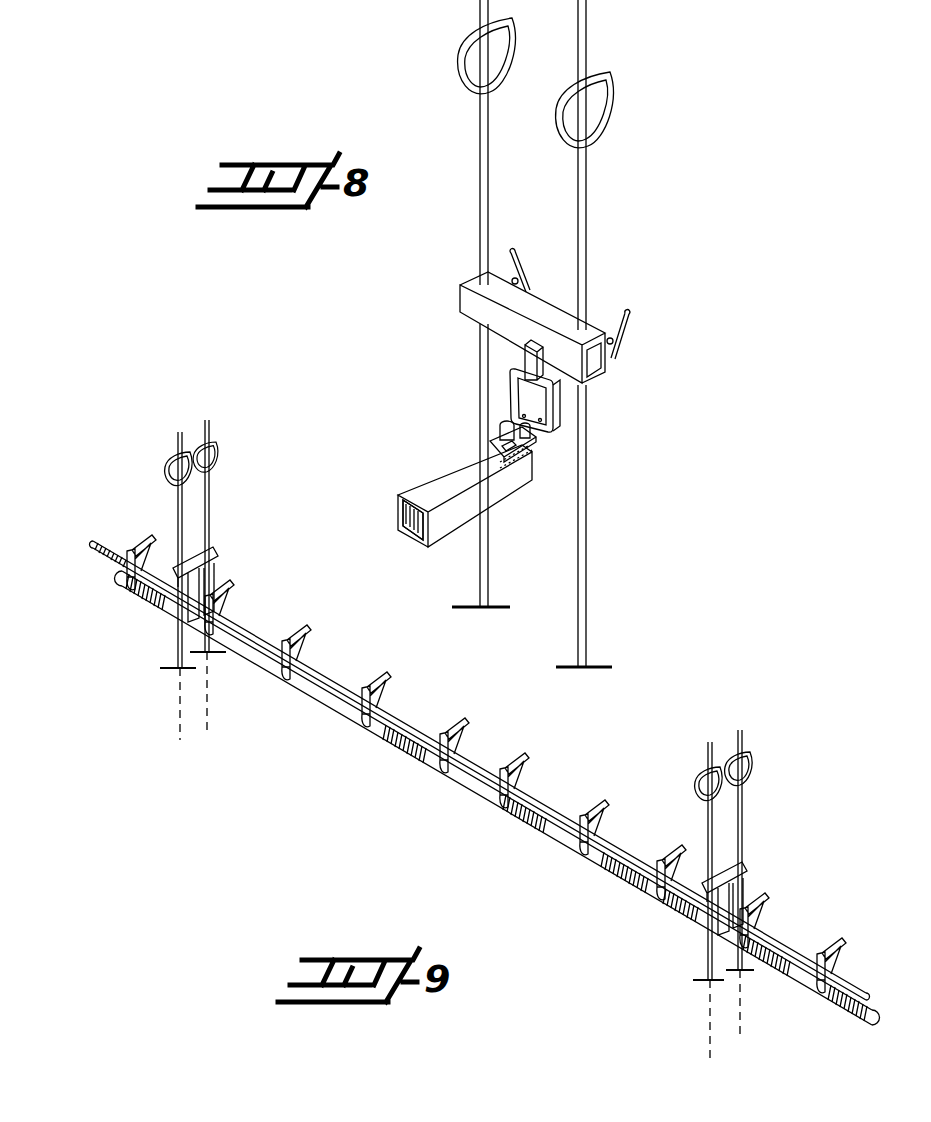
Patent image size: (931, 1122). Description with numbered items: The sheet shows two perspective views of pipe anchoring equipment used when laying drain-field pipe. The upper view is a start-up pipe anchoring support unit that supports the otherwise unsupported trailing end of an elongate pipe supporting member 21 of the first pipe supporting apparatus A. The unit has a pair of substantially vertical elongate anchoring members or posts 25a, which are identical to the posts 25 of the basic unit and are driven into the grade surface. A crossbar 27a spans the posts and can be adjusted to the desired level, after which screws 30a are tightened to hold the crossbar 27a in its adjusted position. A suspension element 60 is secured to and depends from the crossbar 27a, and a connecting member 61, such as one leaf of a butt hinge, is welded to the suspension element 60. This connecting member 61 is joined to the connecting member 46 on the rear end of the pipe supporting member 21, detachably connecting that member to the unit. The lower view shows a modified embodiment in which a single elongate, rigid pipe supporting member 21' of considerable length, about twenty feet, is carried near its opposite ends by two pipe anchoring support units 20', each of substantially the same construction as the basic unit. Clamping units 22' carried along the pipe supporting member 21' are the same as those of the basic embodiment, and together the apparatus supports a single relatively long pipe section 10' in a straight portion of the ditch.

In FIG. 8, the anchoring members or posts 25 is at (578, 175).
In FIG. 8, the anchoring members or posts 25a is at (560, 100).
In FIG. 8, the crossbar 27a is at (482, 316).
In FIG. 8, the screws 30a is at (618, 320).
In FIG. 8, the suspension element 60 is at (560, 414).
In FIG. 8, the connecting member 61 is at (540, 444).
In FIG. 8, the connecting member 46 is at (490, 458).
In FIG. 8, the pipe supporting member 21 is at (453, 496).
In FIG. 8, the first pipe supporting apparatus A is at (415, 544).
In FIG. 9, the pipe anchoring support units 20' is at (488, 720).
In FIG. 9, the clamping units 22' is at (487, 764).
In FIG. 9, the pipe supporting member 21' is at (480, 770).
In FIG. 9, the pipe section 10' is at (497, 798).